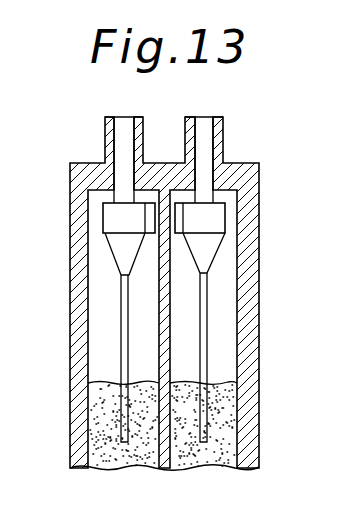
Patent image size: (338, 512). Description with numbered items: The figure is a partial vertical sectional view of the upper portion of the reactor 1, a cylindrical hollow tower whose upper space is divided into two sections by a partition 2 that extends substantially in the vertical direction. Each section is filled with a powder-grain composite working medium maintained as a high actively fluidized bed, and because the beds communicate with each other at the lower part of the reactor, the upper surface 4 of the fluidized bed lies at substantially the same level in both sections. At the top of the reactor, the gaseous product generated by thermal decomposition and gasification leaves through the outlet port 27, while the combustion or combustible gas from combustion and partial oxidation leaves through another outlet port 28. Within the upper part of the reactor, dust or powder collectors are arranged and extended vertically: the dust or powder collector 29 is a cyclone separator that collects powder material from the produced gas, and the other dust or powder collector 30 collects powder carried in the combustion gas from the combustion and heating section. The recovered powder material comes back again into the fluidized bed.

The reactor 1 is at (70, 186).
The partition 2 is at (170, 327).
The upper surface of the fluidized bed 4 is at (108, 382).
The outlet port 27 is at (105, 138).
The outlet port 28 is at (223, 140).
The dust or powder collector 29 is at (103, 220).
The dust or powder collector 30 is at (225, 220).